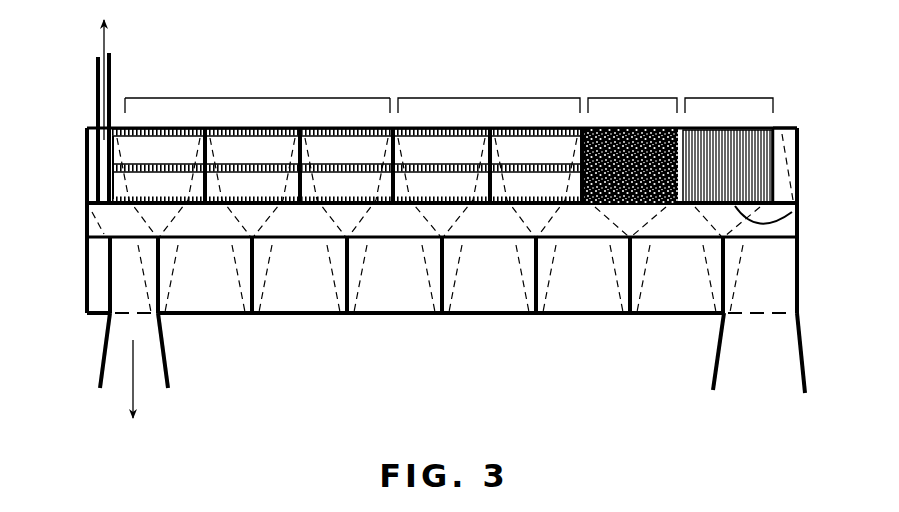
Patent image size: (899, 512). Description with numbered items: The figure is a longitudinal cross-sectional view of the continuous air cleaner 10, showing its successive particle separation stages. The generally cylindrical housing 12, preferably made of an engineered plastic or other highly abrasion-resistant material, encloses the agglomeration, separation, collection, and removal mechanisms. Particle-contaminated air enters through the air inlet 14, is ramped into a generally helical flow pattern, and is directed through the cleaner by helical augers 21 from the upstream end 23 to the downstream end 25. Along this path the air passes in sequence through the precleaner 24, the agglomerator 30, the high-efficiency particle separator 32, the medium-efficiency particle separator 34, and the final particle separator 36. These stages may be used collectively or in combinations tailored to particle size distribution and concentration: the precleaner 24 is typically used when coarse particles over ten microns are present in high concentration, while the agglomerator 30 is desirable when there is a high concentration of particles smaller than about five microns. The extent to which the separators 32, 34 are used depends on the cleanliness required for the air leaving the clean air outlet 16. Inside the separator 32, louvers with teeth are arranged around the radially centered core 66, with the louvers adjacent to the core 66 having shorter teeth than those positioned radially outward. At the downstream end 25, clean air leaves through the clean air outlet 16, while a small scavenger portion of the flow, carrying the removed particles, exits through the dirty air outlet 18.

The continuous air cleaner 10 is at (410, 322).
The housing 12 is at (593, 320).
The air inlet 14 is at (752, 383).
The clean air outlet 16 is at (118, 388).
The dirty air outlet 18 is at (111, 50).
The helical augers 21 is at (786, 139).
The upstream end 23 is at (801, 171).
The precleaner 24 is at (717, 96).
The downstream end 25 is at (86, 165).
The agglomerator 30 is at (633, 96).
The high-efficiency particle separator 32 is at (491, 96).
The medium-efficiency particle separator 34 is at (300, 96).
The final particle separator 36 is at (165, 96).
The radially centered core 66 is at (792, 212).